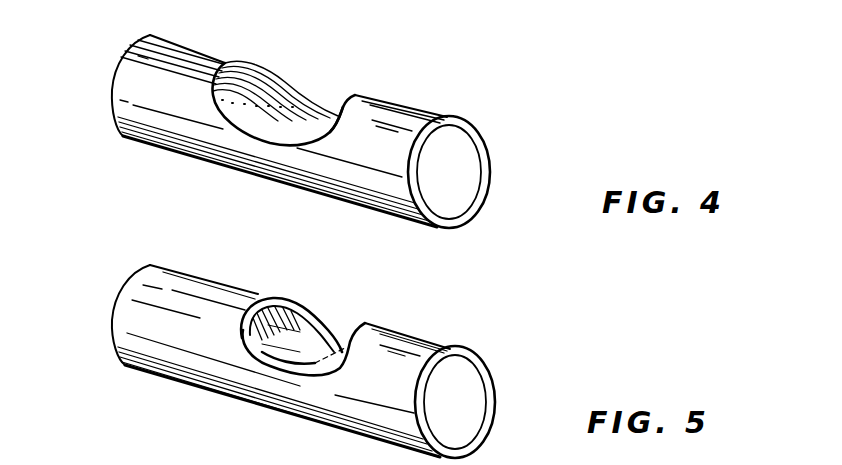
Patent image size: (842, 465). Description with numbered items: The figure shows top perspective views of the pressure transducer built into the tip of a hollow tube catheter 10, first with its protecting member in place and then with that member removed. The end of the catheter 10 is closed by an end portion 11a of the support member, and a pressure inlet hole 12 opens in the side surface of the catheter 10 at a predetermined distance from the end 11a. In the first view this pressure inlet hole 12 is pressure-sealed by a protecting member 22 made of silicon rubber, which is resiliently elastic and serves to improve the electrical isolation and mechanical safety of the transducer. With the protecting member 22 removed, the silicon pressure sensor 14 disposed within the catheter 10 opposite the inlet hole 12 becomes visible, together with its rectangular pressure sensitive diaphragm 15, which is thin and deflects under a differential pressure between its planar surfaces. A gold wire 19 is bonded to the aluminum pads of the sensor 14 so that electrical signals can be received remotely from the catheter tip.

In FIG. 4, the hollow tube catheter 10 is at (197, 148).
In FIG. 5, the hollow tube catheter 10 is at (182, 373).
In FIG. 4, the end portion of the support member 11a is at (465, 167).
In FIG. 5, the end portion of the support member 11a is at (468, 390).
In FIG. 4, the pressure inlet hole 12 is at (297, 85).
In FIG. 4, the protecting member 22 is at (322, 117).
In FIG. 5, the silicon pressure sensor 14 is at (305, 352).
In FIG. 5, the pressure sensitive diaphragm 15 is at (360, 305).
In FIG. 5, the gold wire 19 is at (247, 333).